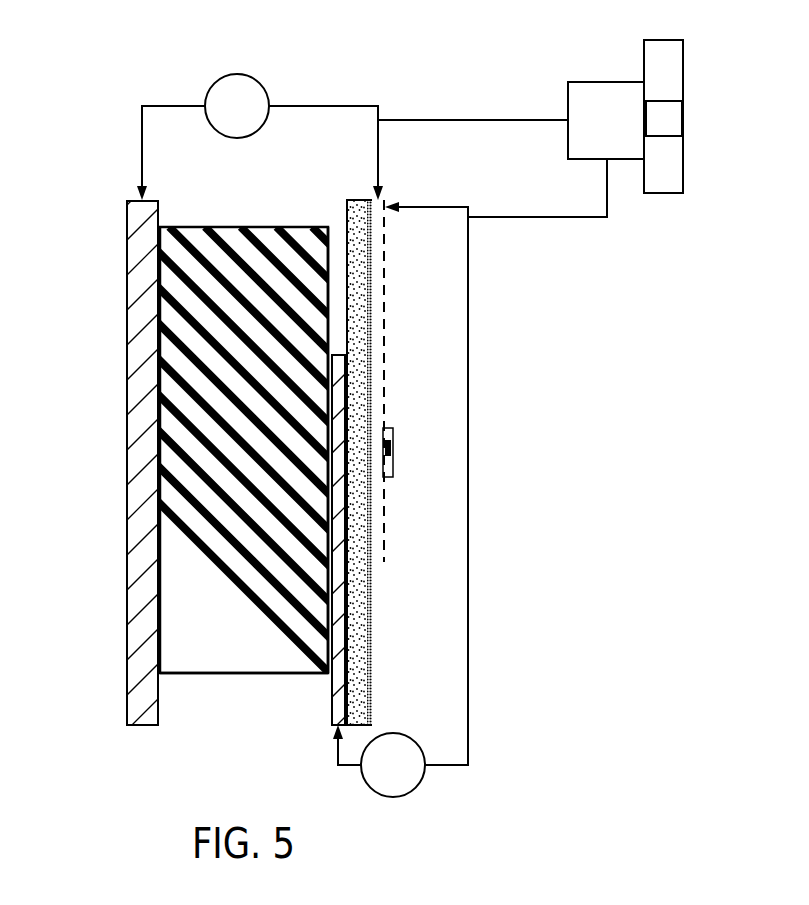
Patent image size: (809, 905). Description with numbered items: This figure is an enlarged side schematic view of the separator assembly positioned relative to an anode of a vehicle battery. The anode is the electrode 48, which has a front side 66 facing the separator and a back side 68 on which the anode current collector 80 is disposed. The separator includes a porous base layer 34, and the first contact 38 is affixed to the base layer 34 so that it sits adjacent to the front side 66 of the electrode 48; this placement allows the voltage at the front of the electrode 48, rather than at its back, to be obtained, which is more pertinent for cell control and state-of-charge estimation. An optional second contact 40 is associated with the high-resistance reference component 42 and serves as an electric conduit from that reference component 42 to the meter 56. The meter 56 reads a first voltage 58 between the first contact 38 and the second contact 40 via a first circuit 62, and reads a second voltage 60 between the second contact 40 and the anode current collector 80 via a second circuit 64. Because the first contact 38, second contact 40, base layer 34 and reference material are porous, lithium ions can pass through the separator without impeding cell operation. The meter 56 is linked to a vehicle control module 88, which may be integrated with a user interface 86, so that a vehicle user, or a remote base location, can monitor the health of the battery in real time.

The base layer 34 is at (360, 298).
The first contact 38 is at (337, 712).
The second contact 40 is at (382, 370).
The reference component 42 is at (390, 440).
The electrode 48 is at (240, 676).
The meter 56 is at (605, 82).
The first voltage 58 is at (395, 797).
The second voltage 60 is at (237, 73).
The first circuit 62 is at (470, 743).
The second circuit 64 is at (322, 104).
The front side 66 is at (327, 620).
The back side 68 is at (178, 507).
The anode current collector 80 is at (132, 610).
The user interface 86 is at (667, 78).
The vehicle control module 88 is at (668, 120).